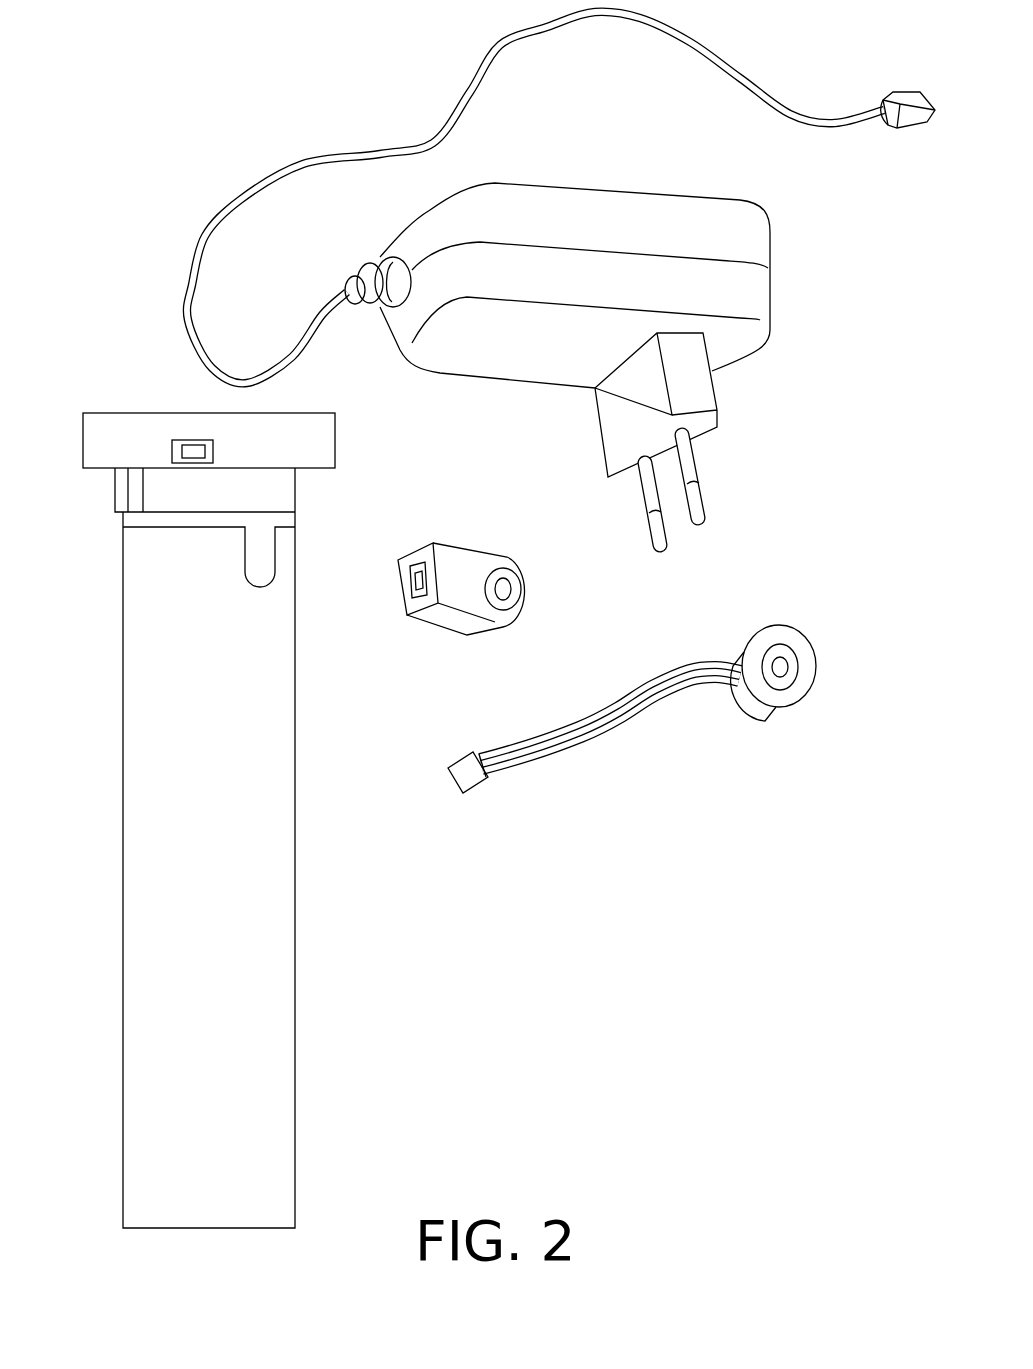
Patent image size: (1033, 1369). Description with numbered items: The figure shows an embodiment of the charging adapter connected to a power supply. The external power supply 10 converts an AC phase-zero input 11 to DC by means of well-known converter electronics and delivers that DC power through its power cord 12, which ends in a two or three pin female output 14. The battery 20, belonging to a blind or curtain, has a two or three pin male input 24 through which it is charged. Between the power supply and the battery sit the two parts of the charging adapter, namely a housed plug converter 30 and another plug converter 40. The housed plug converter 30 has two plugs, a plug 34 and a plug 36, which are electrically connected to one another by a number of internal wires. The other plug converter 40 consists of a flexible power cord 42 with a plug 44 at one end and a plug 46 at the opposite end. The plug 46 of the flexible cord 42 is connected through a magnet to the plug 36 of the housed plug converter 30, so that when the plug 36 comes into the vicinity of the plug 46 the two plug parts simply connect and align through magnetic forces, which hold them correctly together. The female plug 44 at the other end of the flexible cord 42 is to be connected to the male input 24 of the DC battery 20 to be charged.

The external power supply 10 is at (633, 218).
The AC input 11 is at (697, 392).
The power cord 12 is at (475, 98).
The female output 14 is at (912, 120).
The battery 20 is at (147, 685).
The male input 24 is at (190, 450).
The plug converter 30 is at (452, 530).
The plug 34 is at (412, 580).
The plug 36 is at (507, 592).
The plug converter 40 is at (623, 703).
The flexible power cord 42 is at (624, 760).
The female plug 44 is at (475, 787).
The plug 46 is at (787, 638).